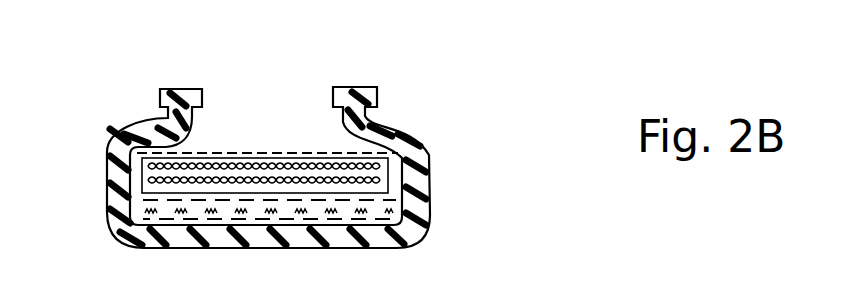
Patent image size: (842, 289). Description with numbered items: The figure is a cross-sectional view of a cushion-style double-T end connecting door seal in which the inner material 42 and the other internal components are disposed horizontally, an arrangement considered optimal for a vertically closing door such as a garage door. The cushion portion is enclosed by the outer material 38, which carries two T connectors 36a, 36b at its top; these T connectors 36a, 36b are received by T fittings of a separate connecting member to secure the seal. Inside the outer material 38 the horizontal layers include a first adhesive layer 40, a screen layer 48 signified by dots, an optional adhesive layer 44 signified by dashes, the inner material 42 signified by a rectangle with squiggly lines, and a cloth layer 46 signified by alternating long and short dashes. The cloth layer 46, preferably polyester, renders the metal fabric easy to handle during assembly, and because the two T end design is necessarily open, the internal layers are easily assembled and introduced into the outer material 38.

The T connector 36a is at (160, 98).
The T connector 36b is at (378, 98).
The outer material 38 is at (430, 152).
The first adhesive layer 40 is at (423, 233).
The inner material 42 is at (388, 178).
The optional adhesive layer 44 is at (392, 216).
The cloth layer 46 is at (243, 152).
The screen layer 48 is at (133, 213).